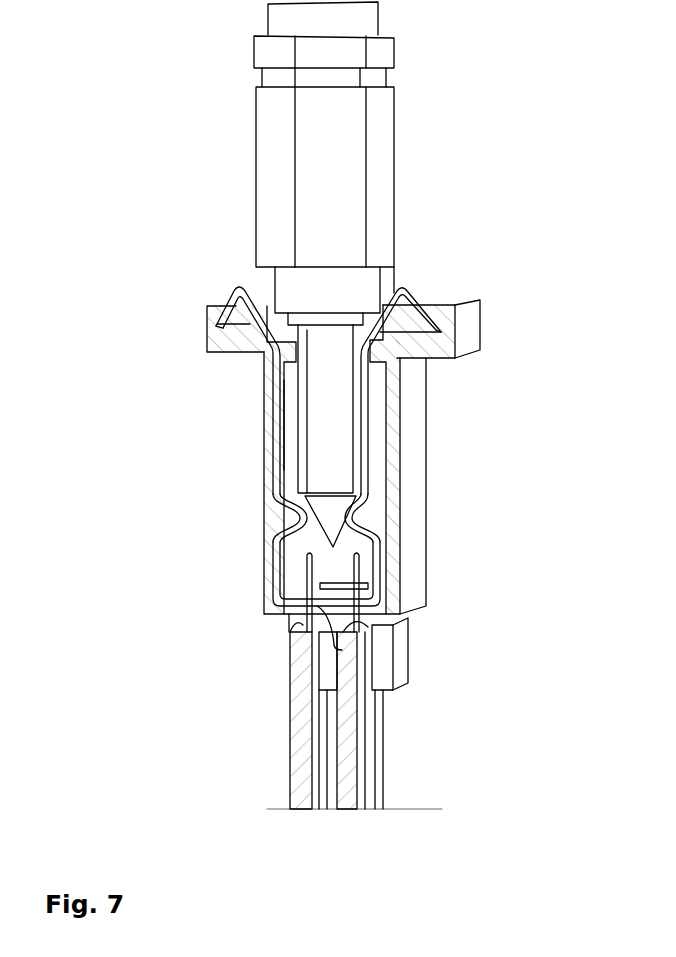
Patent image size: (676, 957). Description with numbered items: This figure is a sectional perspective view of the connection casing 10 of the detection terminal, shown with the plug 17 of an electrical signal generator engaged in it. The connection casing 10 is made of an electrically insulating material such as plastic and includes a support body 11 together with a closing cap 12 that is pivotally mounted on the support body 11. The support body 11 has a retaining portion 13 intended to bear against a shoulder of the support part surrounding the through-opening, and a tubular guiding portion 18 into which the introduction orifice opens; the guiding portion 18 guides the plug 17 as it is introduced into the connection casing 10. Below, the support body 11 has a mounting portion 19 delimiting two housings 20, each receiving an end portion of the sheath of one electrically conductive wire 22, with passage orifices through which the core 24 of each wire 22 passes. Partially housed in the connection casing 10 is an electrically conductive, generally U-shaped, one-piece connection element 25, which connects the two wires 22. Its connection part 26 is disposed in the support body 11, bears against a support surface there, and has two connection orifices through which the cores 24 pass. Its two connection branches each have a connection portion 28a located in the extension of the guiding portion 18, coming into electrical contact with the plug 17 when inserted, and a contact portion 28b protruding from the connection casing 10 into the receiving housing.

The connection casing 10 is at (438, 579).
The support body 11 is at (415, 408).
The closing cap 12 is at (390, 275).
The retaining portion 13 is at (485, 323).
The plug 17 is at (332, 426).
The guiding portion 18 is at (316, 368).
The mounting portion 19 is at (393, 657).
The housing 20 is at (322, 684).
The electrically conductive wire 22 is at (343, 750).
The core 24 is at (320, 588).
The connection element 25 is at (285, 419).
The connection part 26 is at (300, 642).
The connection portion 28a is at (300, 505).
The contact portion 28b is at (236, 306).